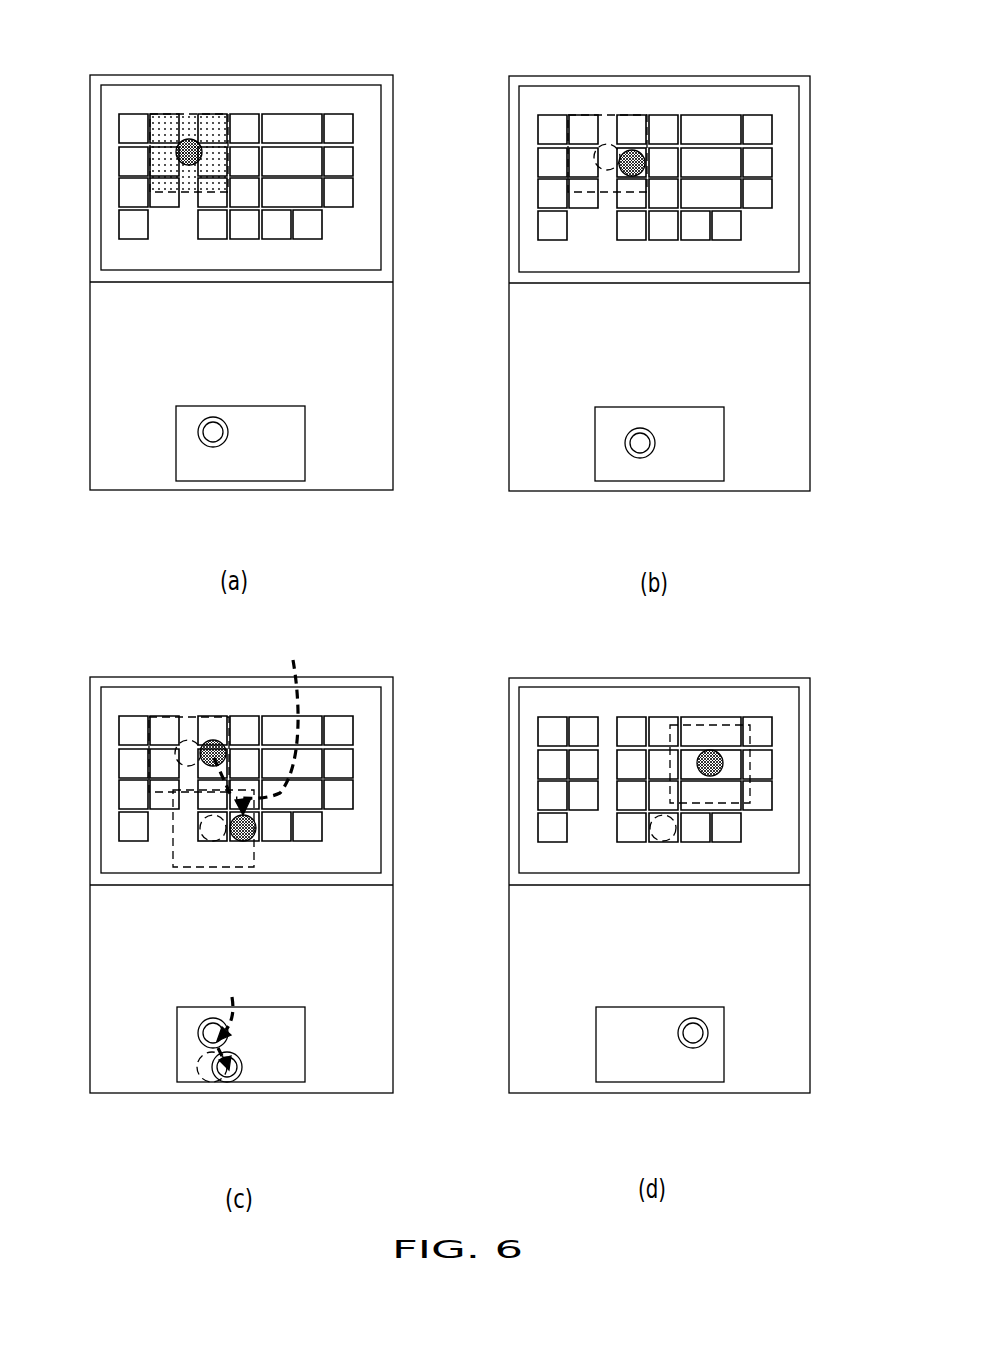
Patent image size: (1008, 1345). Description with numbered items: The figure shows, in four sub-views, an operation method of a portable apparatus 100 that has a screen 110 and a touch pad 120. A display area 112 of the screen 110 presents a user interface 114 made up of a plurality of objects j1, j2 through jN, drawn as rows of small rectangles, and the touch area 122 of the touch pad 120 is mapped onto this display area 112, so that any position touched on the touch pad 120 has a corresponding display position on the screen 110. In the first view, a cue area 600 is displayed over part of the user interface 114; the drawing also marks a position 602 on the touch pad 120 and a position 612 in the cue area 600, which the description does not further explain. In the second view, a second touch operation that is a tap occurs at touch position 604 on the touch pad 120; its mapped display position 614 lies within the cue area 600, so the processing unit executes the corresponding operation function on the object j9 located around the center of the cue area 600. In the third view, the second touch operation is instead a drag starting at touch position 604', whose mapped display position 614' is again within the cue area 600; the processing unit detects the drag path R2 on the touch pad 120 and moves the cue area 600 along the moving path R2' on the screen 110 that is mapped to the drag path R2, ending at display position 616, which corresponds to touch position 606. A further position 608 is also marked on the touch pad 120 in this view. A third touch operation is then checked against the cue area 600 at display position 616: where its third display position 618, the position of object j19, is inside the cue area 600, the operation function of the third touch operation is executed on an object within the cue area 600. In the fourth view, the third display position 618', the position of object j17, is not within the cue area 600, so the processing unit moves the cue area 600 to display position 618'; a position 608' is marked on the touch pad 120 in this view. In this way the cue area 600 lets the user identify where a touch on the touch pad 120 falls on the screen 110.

The portable apparatus 100 is at (122, 74).
The screen 110 is at (388, 92).
The display area 112 is at (365, 128).
The user interface 114 is at (343, 163).
The touch pad 120 is at (452, 782).
The touch area 122 is at (230, 462).
The object j1 is at (119, 128).
The object j2 is at (119, 160).
The object jN is at (343, 193).
The object j9 is at (648, 170).
The object j17 is at (690, 757).
The object j19 is at (200, 840).
The cue area 600 is at (220, 113).
The cursor 602 is at (204, 436).
The touch position 604 is at (624, 490).
The touch position 604' is at (180, 1078).
The touch position 606 is at (228, 1072).
The previous cursor position 608 is at (192, 1108).
The cursor 608' is at (730, 1080).
The first touch point 612 is at (189, 138).
The display position 614 is at (640, 101).
The display position 614' is at (239, 687).
The display position 616 is at (258, 830).
The third display position 618 is at (206, 879).
The third display position 618' is at (724, 702).
The drag path R2 is at (231, 1017).
The moving path R2' is at (260, 723).